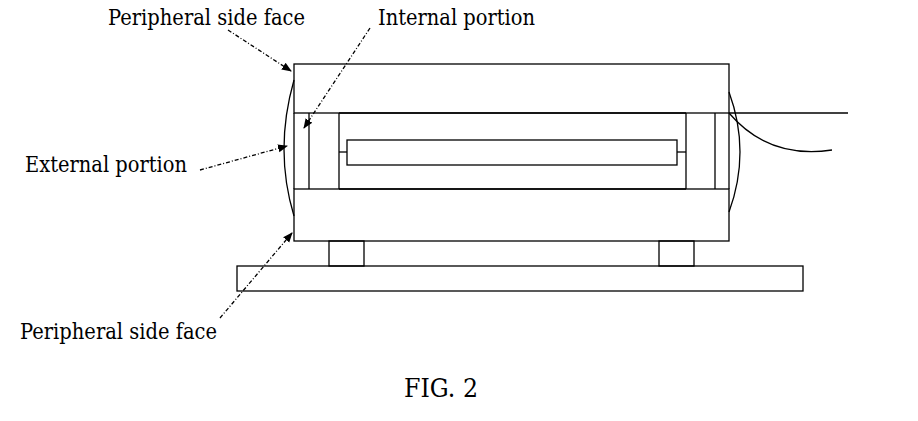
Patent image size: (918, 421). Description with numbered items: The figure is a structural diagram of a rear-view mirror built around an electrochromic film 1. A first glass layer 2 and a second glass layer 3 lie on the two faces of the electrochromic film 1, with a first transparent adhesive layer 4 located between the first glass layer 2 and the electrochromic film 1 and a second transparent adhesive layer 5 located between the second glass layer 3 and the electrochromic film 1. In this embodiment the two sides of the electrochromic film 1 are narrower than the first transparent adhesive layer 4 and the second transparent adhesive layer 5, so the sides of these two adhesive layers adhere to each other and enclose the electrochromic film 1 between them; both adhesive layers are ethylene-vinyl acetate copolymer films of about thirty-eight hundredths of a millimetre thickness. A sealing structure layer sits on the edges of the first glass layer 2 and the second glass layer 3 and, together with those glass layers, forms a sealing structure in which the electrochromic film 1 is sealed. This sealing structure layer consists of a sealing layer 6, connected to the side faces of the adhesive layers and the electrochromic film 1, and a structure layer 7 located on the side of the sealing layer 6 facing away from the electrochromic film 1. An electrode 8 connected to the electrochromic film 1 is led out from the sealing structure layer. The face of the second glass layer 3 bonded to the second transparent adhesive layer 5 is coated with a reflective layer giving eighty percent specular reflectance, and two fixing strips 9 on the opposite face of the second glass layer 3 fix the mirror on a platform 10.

The electrochromic film 1 is at (512, 152).
The first glass layer 2 is at (511, 88).
The second glass layer 3 is at (511, 215).
The first transparent adhesive layer 4 is at (512, 124).
The second transparent adhesive layer 5 is at (512, 180).
The sealing layer 6 is at (694, 151).
The structure layer 7 is at (512, 148).
The electrode 8 is at (577, 151).
The fixing strip 9 is at (511, 253).
The platform 10 is at (520, 278).